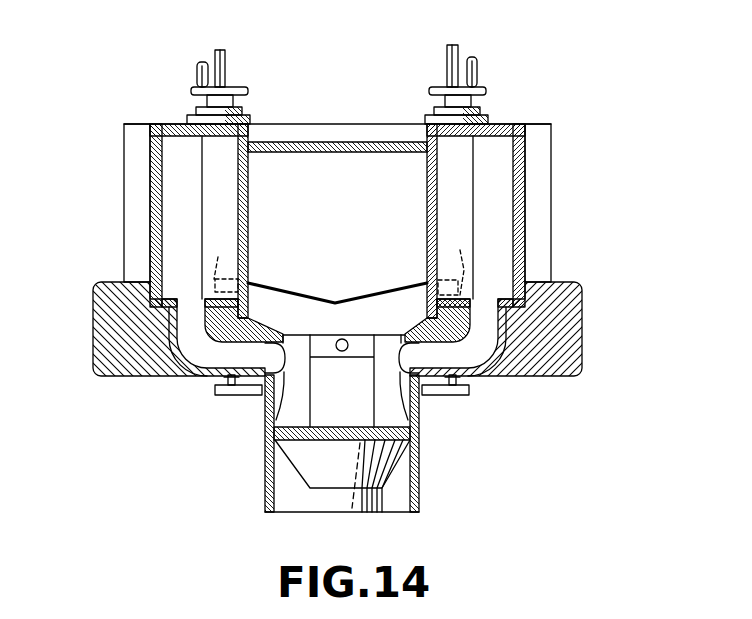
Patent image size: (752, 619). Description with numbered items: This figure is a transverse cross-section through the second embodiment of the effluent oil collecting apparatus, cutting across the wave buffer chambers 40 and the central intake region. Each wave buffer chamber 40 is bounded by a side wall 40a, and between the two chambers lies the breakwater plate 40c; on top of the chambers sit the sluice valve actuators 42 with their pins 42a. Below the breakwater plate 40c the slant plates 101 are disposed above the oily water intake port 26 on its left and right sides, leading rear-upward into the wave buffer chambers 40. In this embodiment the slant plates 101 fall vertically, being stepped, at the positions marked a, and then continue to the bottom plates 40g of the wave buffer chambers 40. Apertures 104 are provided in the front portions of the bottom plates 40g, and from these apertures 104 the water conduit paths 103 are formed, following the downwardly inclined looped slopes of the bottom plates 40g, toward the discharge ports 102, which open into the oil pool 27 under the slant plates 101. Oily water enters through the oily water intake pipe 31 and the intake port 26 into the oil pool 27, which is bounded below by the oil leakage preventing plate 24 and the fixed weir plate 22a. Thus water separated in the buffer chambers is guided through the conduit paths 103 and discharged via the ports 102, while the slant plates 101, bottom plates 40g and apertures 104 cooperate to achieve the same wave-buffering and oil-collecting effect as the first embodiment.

The wave buffer chambers 40 is at (550, 122).
The side wall of the wave buffer chamber 40a is at (130, 184).
The breakwater plate 40c is at (407, 197).
The bottom plates of the wave buffer chambers 40g is at (162, 290).
The sluice valve actuator 42 is at (222, 70).
The electrode pins 42a is at (197, 64).
The apertures 104 is at (190, 297).
The stepped positions a is at (338, 261).
The slant plates 101 is at (393, 300).
The oily water intake port 26 is at (322, 347).
The oily water intake pipe 31 is at (344, 339).
The oil pool 27 is at (357, 417).
The oil leakage preventing plate 24 is at (312, 420).
The fixed weir plate 22a is at (388, 477).
The discharge ports 102 is at (268, 408).
The water conduit paths 103 is at (200, 347).